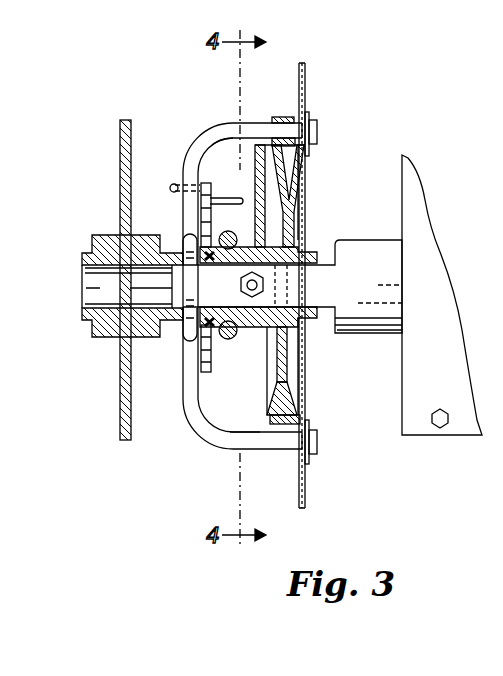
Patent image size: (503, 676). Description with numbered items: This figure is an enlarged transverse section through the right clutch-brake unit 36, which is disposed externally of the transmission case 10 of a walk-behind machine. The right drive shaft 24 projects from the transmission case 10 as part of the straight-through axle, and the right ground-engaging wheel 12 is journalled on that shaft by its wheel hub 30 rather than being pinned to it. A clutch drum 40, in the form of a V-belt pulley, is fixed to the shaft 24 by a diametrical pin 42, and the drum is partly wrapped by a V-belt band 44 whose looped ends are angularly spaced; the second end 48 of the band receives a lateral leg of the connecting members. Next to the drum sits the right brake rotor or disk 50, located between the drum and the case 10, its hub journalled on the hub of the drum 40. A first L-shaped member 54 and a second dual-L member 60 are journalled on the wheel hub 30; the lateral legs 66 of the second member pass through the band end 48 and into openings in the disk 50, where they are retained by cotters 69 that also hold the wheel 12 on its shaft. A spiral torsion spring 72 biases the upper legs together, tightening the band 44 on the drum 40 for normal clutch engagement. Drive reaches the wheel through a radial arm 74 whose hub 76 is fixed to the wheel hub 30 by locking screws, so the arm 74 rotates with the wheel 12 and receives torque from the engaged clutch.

The transmission case 10 is at (459, 436).
The right ground-engaging wheel 12 is at (120, 415).
The right drive shaft 24 is at (320, 288).
The wheel hub 30 is at (282, 243).
The right clutch-brake unit 36 is at (350, 483).
The clutch drum 40 is at (288, 197).
The diametrical pin 42 is at (300, 340).
The V-belt band 44 is at (298, 396).
The second end of clutch band 48 is at (288, 117).
The right brake rotor or disk 50 is at (307, 498).
The first member 54 is at (228, 340).
The second member 60 is at (183, 395).
The lateral legs 66 is at (317, 134).
The cotters 69 is at (307, 126).
The spiral torsion spring 72 is at (200, 352).
The radial arm 74 is at (232, 177).
The hub of the radial arm 76 is at (242, 447).